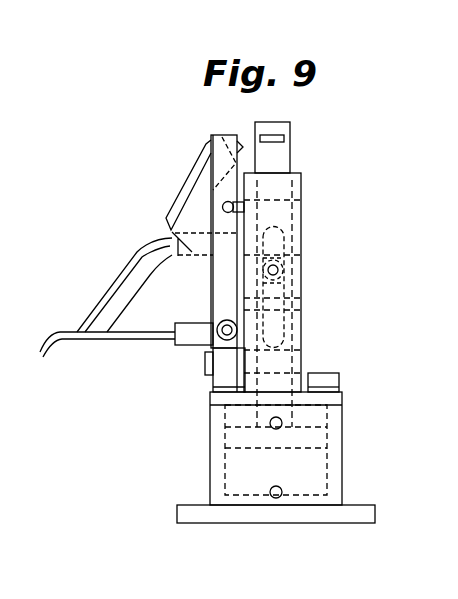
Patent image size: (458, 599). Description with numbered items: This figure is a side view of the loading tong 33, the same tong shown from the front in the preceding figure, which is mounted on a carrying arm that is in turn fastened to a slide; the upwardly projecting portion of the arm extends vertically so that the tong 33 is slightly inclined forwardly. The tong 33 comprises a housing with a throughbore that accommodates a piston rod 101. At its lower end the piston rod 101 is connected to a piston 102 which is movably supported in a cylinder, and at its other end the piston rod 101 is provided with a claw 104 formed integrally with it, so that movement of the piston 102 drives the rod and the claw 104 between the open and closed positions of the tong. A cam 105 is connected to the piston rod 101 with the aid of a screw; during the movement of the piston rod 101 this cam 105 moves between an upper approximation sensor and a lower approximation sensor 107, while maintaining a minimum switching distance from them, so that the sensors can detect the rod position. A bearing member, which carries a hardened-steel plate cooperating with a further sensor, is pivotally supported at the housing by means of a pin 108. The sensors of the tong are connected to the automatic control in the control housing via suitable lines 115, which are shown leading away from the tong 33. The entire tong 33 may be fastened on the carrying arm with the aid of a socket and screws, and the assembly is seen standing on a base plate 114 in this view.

The loading tong 33 is at (302, 192).
The piston rod 101 is at (288, 156).
The piston 102 is at (232, 435).
The claw 104 is at (283, 128).
The cam 105 is at (282, 262).
The lower approximation sensor 107 is at (182, 343).
The pin 108 is at (173, 265).
The base plate 114 is at (372, 515).
The lines 115 is at (73, 297).